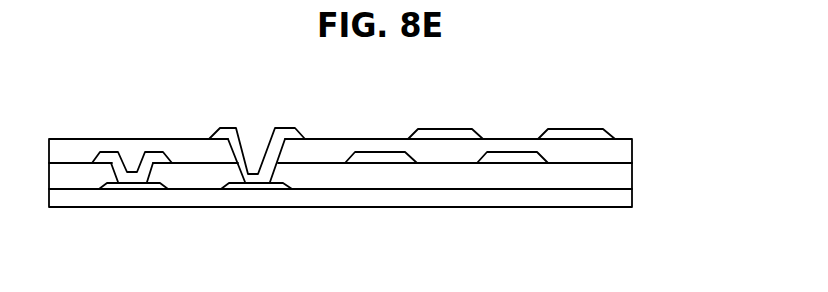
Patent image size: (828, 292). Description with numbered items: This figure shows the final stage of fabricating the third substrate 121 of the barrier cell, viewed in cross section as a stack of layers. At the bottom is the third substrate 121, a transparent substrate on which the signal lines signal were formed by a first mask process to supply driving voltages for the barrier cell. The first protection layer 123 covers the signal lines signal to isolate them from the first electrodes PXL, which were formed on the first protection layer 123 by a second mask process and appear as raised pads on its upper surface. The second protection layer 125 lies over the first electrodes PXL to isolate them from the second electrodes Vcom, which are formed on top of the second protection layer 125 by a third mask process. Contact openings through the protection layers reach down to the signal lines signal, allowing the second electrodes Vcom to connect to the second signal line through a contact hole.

The third substrate 121 is at (628, 197).
The first protection layer 123 is at (628, 174).
The second protection layer 125 is at (628, 152).
The signal lines signal is at (132, 184).
The first electrodes PXL is at (377, 152).
The second electrodes Vcom is at (448, 129).